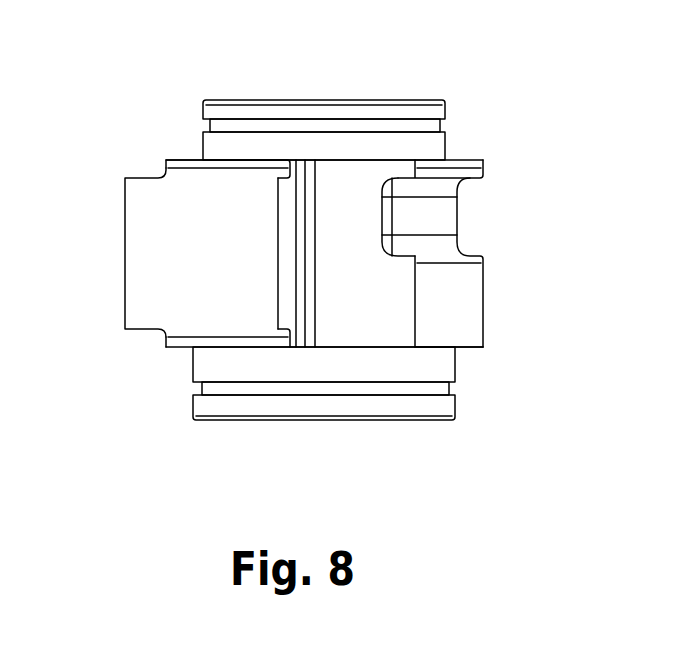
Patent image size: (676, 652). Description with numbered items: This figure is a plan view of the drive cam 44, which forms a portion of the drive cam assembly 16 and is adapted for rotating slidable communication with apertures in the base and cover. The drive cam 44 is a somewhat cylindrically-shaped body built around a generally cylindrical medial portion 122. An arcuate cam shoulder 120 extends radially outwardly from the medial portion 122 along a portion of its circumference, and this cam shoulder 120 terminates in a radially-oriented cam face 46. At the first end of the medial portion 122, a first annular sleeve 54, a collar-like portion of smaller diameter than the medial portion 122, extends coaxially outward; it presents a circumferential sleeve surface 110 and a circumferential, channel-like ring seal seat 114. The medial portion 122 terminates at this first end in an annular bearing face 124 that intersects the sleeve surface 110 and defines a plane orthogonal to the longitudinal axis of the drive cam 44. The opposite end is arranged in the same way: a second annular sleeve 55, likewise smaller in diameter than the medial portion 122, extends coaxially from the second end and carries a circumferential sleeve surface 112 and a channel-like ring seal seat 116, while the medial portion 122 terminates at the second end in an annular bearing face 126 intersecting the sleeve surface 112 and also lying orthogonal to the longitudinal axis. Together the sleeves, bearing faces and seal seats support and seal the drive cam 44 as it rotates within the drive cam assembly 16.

The drive cam assembly 16 is at (78, 115).
The drive cam 44 is at (467, 303).
The cam face 46 is at (287, 293).
The first annular sleeve 54 is at (200, 98).
The second annular sleeve 55 is at (184, 417).
The sleeve surface 110 is at (425, 150).
The sleeve surface 112 is at (443, 363).
The ring seal seat 114 is at (365, 128).
The ring seal seat 116 is at (428, 388).
The cam shoulder 120 is at (153, 295).
The medial portion 122 is at (338, 258).
The bearing face 124 is at (470, 160).
The bearing face 126 is at (483, 347).